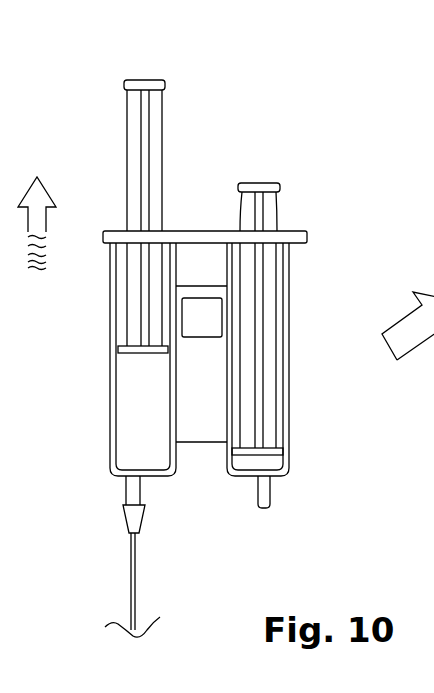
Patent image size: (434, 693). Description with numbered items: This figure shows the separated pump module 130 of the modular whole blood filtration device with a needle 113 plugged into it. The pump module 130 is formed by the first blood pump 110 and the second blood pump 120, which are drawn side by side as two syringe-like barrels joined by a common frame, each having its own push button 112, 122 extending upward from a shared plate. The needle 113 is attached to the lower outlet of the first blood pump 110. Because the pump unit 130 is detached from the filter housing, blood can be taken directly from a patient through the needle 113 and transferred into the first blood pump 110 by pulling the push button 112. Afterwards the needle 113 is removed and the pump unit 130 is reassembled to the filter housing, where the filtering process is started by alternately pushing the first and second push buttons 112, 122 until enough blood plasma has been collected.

The first blood pump 110 is at (137, 366).
The push button 112 is at (131, 80).
The needle 113 is at (138, 572).
The second blood pump 120 is at (276, 418).
The push button 122 is at (261, 184).
The pump module 130 is at (197, 422).